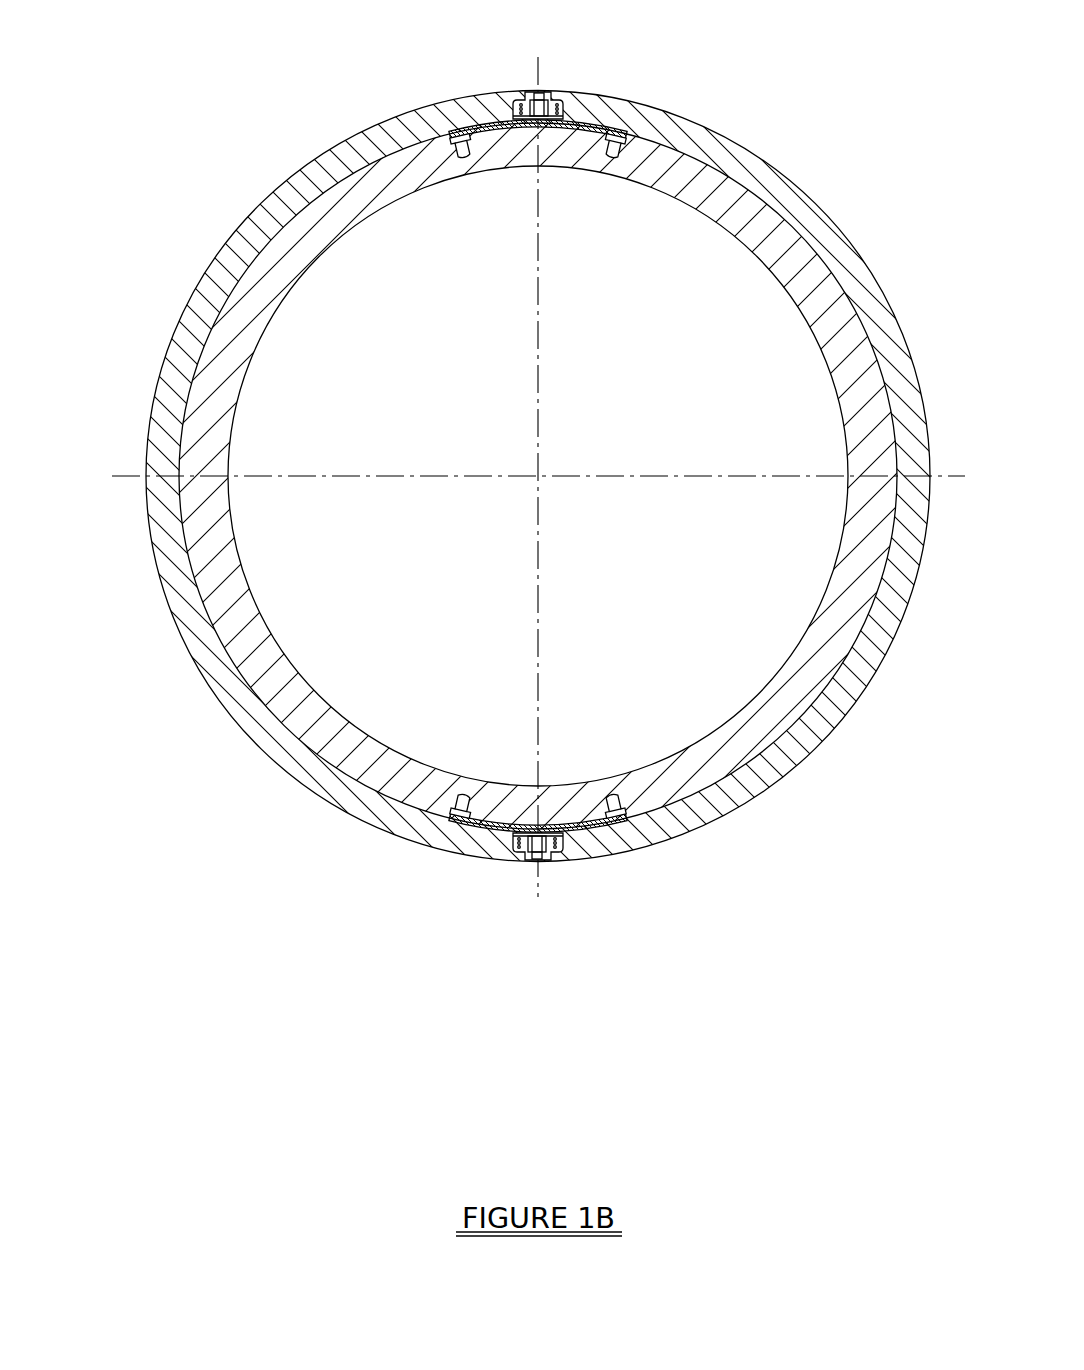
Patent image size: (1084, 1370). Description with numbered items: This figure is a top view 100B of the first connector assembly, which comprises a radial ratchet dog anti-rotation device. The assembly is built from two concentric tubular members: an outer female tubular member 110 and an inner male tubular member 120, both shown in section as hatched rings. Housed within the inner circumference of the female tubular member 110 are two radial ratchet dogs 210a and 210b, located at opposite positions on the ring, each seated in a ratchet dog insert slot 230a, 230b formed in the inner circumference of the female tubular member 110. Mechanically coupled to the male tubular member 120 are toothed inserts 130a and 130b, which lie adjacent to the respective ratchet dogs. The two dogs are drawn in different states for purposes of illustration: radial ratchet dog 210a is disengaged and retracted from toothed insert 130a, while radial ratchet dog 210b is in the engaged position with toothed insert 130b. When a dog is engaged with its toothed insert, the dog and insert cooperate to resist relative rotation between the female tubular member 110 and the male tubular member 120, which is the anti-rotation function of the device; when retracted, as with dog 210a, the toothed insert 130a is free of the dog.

The top view 100B is at (200, 1128).
The female tubular member 110 is at (147, 478).
The male tubular member 120 is at (218, 380).
The toothed insert 130a is at (457, 818).
The toothed insert 130b is at (618, 130).
The radial ratchet dog 210a is at (522, 850).
The radial ratchet dog 210b is at (540, 100).
The ratchet dog insert slot 230a is at (577, 857).
The ratchet dog insert slot 230b is at (507, 100).